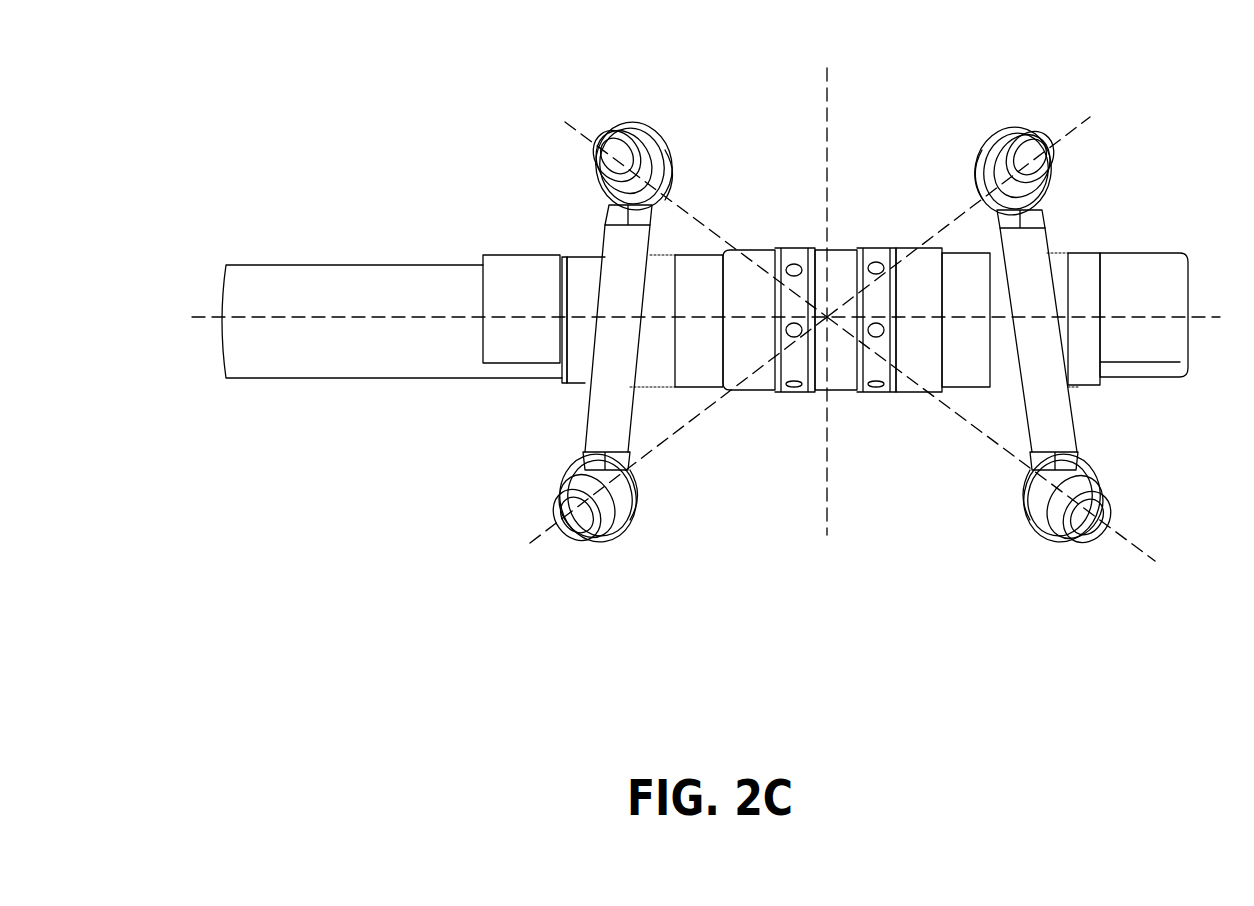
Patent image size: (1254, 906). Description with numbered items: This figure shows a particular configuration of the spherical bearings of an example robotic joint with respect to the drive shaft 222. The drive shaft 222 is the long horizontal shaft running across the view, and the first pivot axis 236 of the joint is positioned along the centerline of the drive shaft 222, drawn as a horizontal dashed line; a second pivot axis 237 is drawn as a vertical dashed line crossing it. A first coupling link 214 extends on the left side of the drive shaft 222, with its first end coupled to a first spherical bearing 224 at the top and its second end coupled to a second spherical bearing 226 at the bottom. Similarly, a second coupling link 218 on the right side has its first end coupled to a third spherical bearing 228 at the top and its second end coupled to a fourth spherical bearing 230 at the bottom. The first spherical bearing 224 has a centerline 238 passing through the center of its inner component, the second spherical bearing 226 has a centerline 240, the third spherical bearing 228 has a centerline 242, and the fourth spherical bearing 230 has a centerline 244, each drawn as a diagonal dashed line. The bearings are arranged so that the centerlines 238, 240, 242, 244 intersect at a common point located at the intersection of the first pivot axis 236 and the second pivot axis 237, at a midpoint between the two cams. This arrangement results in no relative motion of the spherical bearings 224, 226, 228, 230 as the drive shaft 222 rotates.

The first coupling link 214 is at (602, 329).
The second coupling link 218 is at (1044, 331).
The drive shaft 222 is at (247, 265).
The first spherical bearing 224 is at (628, 120).
The second spherical bearing 226 is at (600, 540).
The third spherical bearing 228 is at (1003, 123).
The fourth spherical bearing 230 is at (1043, 540).
The first pivot axis 236 is at (198, 315).
The second pivot axis 237 is at (826, 68).
The centerline 238 is at (698, 220).
The centerline 240 is at (685, 428).
The centerline 242 is at (955, 215).
The centerline 244 is at (970, 422).